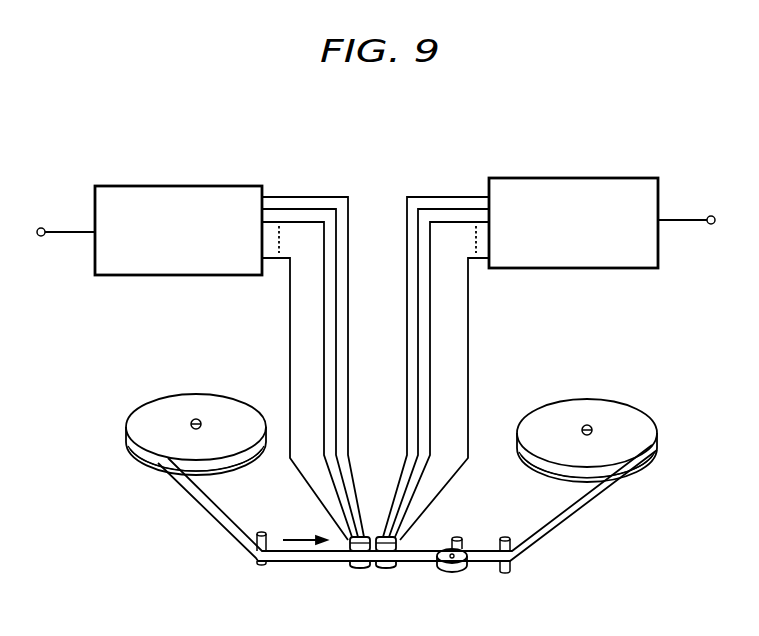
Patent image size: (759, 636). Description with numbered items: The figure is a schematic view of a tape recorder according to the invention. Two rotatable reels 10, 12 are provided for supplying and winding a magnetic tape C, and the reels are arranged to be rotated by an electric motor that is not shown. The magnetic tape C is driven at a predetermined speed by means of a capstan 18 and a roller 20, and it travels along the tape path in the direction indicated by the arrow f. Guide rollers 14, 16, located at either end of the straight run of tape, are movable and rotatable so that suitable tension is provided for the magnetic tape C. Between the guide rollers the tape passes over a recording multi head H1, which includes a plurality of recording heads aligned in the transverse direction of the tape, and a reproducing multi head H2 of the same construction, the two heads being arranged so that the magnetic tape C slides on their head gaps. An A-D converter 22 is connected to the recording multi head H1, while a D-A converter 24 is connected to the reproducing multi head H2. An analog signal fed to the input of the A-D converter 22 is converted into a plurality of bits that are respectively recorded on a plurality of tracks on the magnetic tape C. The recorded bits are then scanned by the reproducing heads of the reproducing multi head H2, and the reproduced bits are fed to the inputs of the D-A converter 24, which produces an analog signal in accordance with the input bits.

The rotatable reel 10 is at (228, 405).
The rotatable reel 12 is at (616, 405).
The guide roller 14 is at (261, 532).
The guide roller 16 is at (504, 535).
The capstan 18 is at (458, 572).
The roller 20 is at (459, 537).
The A-D converter 22 is at (226, 186).
The D-A converter 24 is at (610, 178).
The recording multi head H1 is at (357, 567).
The reproducing multi head H2 is at (389, 567).
The magnetic tape C is at (296, 561).
The tape travel direction f is at (304, 538).